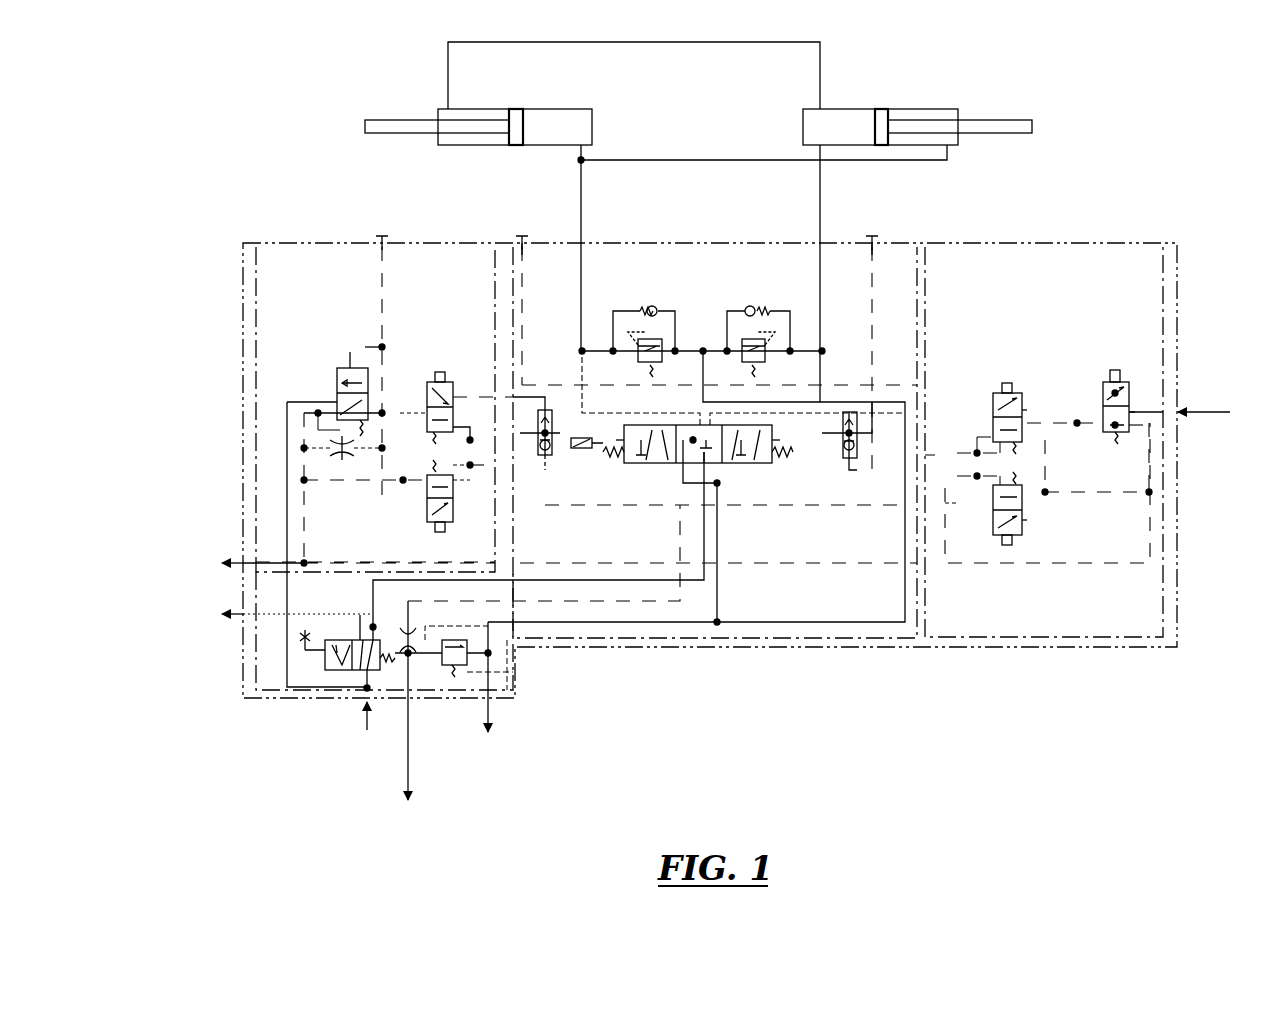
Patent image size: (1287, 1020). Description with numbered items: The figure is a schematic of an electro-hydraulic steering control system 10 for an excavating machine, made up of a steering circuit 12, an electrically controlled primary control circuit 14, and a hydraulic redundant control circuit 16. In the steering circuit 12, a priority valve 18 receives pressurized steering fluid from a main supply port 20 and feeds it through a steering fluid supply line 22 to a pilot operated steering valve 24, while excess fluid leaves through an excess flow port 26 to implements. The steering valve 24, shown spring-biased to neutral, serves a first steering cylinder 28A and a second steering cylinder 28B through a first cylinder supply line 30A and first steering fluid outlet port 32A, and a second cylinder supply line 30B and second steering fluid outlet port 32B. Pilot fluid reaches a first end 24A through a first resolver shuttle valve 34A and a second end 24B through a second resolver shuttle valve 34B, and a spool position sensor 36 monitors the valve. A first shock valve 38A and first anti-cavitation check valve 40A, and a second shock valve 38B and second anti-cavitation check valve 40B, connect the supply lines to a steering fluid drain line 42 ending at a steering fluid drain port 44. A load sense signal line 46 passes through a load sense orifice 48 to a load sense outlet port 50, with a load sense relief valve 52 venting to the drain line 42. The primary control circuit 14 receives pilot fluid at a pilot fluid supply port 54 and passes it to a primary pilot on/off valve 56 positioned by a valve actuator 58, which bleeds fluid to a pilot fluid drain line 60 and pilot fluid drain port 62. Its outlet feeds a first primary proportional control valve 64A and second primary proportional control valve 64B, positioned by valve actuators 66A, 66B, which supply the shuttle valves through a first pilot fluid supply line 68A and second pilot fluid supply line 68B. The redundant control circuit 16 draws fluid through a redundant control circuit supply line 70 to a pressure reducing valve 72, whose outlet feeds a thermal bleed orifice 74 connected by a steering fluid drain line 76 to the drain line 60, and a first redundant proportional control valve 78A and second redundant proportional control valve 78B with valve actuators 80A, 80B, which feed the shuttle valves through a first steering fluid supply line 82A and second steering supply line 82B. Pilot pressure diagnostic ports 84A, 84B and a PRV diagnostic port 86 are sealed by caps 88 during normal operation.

The electro-hydraulic steering control system 10 is at (243, 243).
The steering circuit 12 is at (700, 243).
The electrically controlled primary control circuit 14 is at (1163, 243).
The hydraulic redundant control circuit 16 is at (256, 305).
The priority valve 18 is at (325, 672).
The main supply port 20 is at (365, 700).
The steering fluid supply line 22 is at (592, 580).
The pilot operated steering valve 24 is at (772, 460).
The first end of the steering valve 24A is at (624, 440).
The second end of the steering valve 24B is at (772, 440).
The excess flow port 26 is at (243, 614).
The first steering cylinder 28A is at (547, 109).
The second steering cylinder 28B is at (847, 109).
The first cylinder supply line 30A is at (582, 300).
The second cylinder supply line 30B is at (822, 300).
The first steering fluid outlet port 32A is at (582, 243).
The second steering fluid outlet port 32B is at (820, 243).
The first resolver shuttle valve 34A is at (548, 455).
The second resolver shuttle valve 34B is at (849, 460).
The spool position sensor 36 is at (585, 448).
The first shock valve 38A is at (638, 352).
The second shock valve 38B is at (765, 358).
The first anti-cavitation check valve 40A is at (652, 306).
The second anti-cavitation check valve 40B is at (750, 306).
The steering fluid drain line 42 is at (780, 622).
The steering fluid drain port 44 is at (495, 690).
The load sense signal line 46 is at (680, 601).
The load sense orifice 48 is at (425, 690).
The load sense outlet port 50 is at (410, 700).
The load sense relief valve 52 is at (488, 655).
The pilot fluid supply port 54 is at (1177, 415).
The primary pilot on/off valve 56 is at (1130, 395).
The valve actuator 58 is at (1115, 370).
The pilot fluid drain line 60 is at (1150, 563).
The pilot fluid drain port 62 is at (243, 563).
The first primary proportional control valve 64A is at (1022, 520).
The second primary proportional control valve 64B is at (1022, 405).
The valve actuator 66A is at (1007, 545).
The valve actuator 66B is at (1007, 383).
The first pilot fluid supply line 68A is at (945, 503).
The second pilot fluid supply line 68B is at (932, 455).
The redundant control circuit supply line 70 is at (287, 475).
The pressure reducing valve 72 is at (337, 393).
The thermal bleed orifice 74 is at (342, 460).
The steering fluid drain line 76 is at (304, 563).
The first redundant proportional control valve 78A is at (427, 510).
The second redundant proportional control valve 78B is at (427, 405).
The valve actuator 80A is at (440, 532).
The valve actuator 80B is at (440, 372).
The first steering fluid supply line 82A is at (470, 468).
The second steering supply line 82B is at (530, 397).
The pilot pressure diagnostic port 84A is at (522, 243).
The pilot pressure diagnostic port 84B is at (872, 243).
The PRV diagnostic port 86 is at (382, 243).
The caps 88 is at (382, 240).